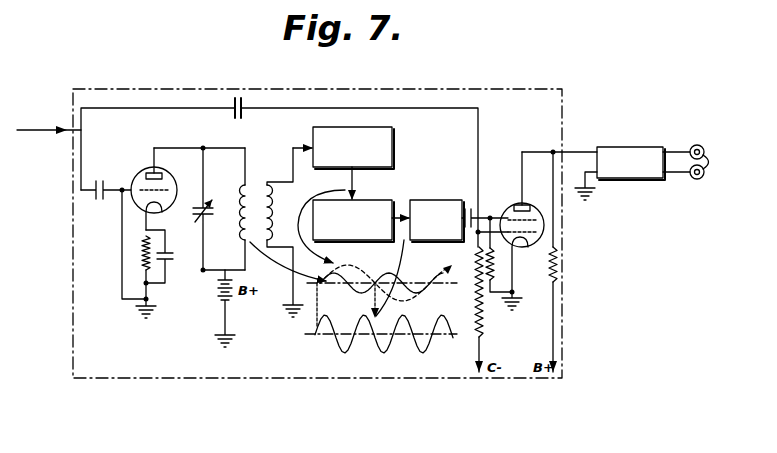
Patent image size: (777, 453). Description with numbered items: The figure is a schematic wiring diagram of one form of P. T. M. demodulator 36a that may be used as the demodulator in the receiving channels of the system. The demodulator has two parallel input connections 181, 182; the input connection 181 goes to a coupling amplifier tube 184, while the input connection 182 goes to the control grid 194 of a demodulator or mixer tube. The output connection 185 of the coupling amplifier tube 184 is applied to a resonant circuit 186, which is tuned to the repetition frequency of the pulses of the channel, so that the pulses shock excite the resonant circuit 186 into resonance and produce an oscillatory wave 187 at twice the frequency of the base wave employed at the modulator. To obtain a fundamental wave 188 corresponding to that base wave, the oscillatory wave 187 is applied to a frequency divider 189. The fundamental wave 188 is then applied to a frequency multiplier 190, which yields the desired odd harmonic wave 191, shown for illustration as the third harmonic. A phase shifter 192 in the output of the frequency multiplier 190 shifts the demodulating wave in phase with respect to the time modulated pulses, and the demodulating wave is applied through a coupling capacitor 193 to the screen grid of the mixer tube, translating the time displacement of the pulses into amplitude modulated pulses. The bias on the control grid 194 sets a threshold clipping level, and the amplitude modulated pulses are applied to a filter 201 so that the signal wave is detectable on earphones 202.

The P. T. M. demodulator 36a is at (166, 87).
The input connection 181 is at (82, 158).
The input connection 182 is at (158, 109).
The coupling amplifier tube 184 is at (170, 180).
The output connection 185 is at (170, 147).
The resonant circuit 186 is at (228, 146).
The oscillatory wave 187 is at (397, 285).
The fundamental wave 188 is at (388, 255).
The frequency divider 189 is at (361, 127).
The frequency multiplier 190 is at (369, 200).
The odd harmonic wave 191 is at (404, 338).
The phase shifter 192 is at (436, 200).
The coupling capacitor 193 is at (513, 200).
The control grid 194 is at (532, 230).
The filter 201 is at (632, 147).
The earphones 202 is at (695, 144).